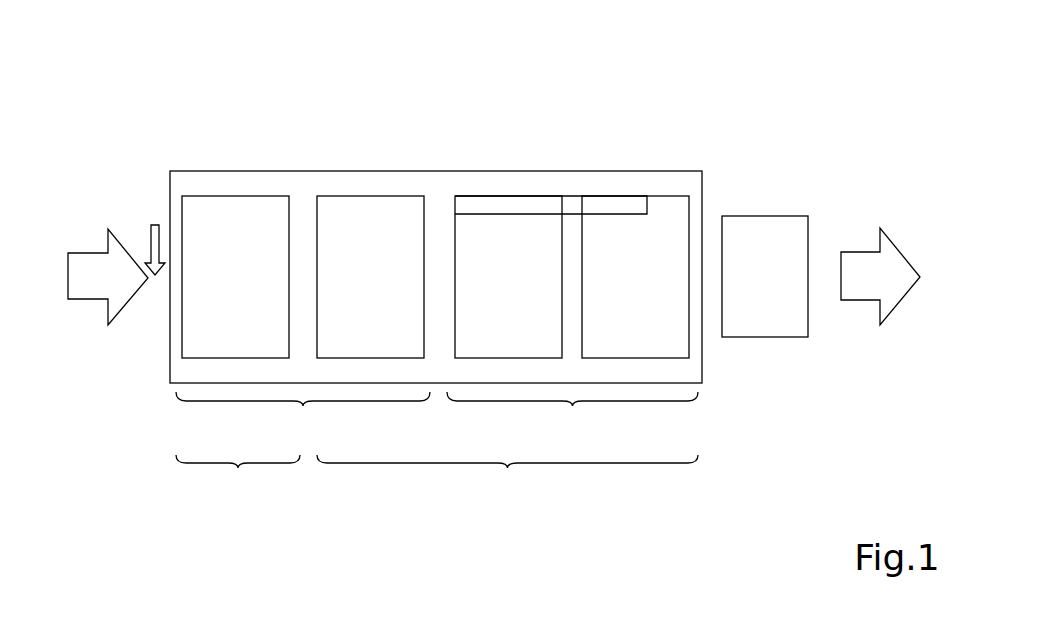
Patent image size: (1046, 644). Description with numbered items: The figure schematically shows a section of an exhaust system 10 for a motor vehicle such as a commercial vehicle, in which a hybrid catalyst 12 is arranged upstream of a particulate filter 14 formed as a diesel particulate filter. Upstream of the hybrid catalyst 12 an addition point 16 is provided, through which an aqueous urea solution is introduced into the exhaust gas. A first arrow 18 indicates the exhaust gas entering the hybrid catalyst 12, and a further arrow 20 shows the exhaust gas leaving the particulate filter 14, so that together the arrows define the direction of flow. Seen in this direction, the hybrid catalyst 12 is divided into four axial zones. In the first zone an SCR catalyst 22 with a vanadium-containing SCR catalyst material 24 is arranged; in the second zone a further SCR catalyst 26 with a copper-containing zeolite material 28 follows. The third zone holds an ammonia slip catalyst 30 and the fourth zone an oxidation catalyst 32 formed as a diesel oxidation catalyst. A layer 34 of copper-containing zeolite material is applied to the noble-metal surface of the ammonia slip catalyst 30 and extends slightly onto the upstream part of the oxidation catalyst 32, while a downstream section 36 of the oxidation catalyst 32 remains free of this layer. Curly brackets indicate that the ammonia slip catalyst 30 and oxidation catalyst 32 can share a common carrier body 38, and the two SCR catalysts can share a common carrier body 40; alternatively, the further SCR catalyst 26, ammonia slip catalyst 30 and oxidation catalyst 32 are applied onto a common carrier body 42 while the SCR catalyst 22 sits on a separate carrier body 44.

The exhaust system 10 is at (173, 130).
The hybrid catalyst 12 is at (645, 185).
The particulate filter 14 is at (765, 235).
The addition point 16 is at (155, 225).
The first arrow 18 is at (95, 285).
The further arrow 20 is at (870, 285).
The SCR catalyst 22 is at (237, 208).
The SCR catalyst material 24 is at (233, 290).
The further SCR catalyst 26 is at (375, 208).
The zeolite material 28 is at (370, 290).
The ammonia slip catalyst 30 is at (530, 230).
The oxidation catalyst 32 is at (620, 232).
The layer 34 is at (473, 208).
The downstream section 36 is at (670, 196).
The common carrier body 38 is at (572, 411).
The common carrier body 40 is at (303, 411).
The common carrier body 42 is at (507, 477).
The separate carrier body 44 is at (238, 477).